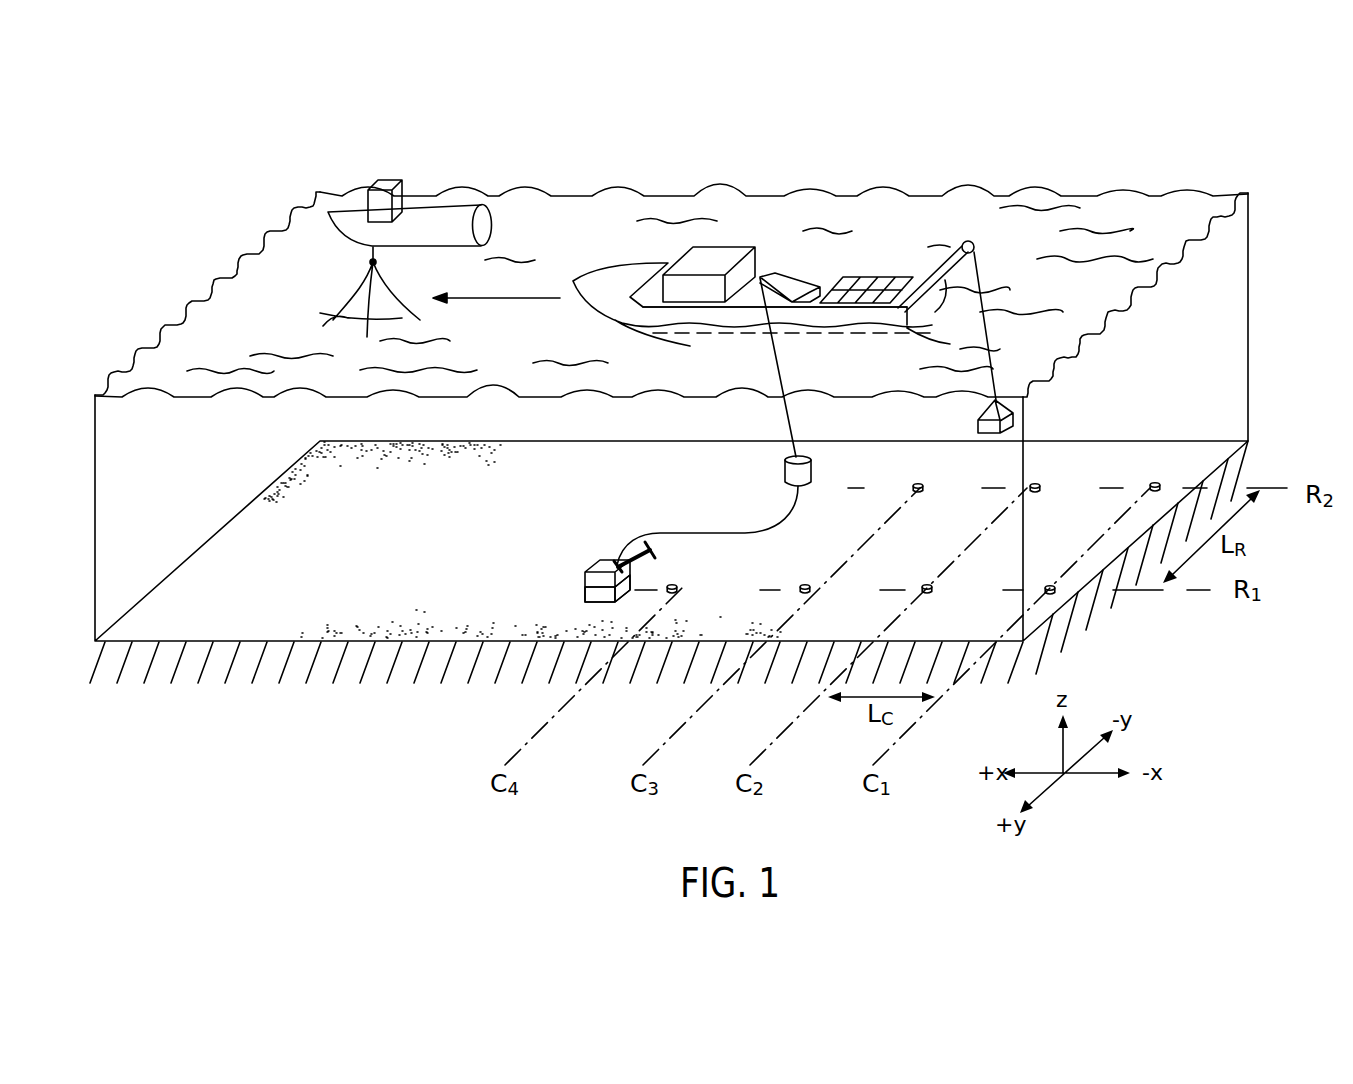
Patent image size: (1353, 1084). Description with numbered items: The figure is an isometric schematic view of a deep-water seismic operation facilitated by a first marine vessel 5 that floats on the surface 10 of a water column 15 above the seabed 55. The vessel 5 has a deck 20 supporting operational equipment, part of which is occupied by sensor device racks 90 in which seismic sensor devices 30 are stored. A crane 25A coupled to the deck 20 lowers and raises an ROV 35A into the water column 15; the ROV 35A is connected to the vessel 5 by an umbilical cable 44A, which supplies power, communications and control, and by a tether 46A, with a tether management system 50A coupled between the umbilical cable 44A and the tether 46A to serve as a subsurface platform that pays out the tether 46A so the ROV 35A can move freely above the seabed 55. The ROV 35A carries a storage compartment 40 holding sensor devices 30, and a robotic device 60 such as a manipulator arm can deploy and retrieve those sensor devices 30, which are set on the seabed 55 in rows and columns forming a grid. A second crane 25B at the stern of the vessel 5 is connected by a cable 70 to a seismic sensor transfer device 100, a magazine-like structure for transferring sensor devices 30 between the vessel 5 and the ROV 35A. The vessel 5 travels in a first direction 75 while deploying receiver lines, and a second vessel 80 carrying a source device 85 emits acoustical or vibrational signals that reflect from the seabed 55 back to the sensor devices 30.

The first marine vessel 5 is at (622, 272).
The surface 10 is at (1157, 208).
The water column 15 is at (1225, 313).
The deck 20 is at (828, 278).
The crane 25A is at (762, 279).
The crane 25B is at (967, 243).
The seismic sensor devices 30 is at (1165, 466).
The ROV 35A is at (586, 573).
The seismic sensor device storage compartment 40 is at (585, 595).
The umbilical cable 44A is at (765, 365).
The tether 46A is at (659, 533).
The tether management system 50A is at (787, 463).
The seabed 55 is at (700, 630).
The robotic device 60 is at (632, 548).
The cable 70 is at (980, 367).
The first direction 75 is at (509, 303).
The second vessel 80 is at (484, 222).
The source device 85 is at (371, 262).
The sensor device racks 90 is at (885, 280).
The seismic sensor transfer device 100 is at (1013, 420).